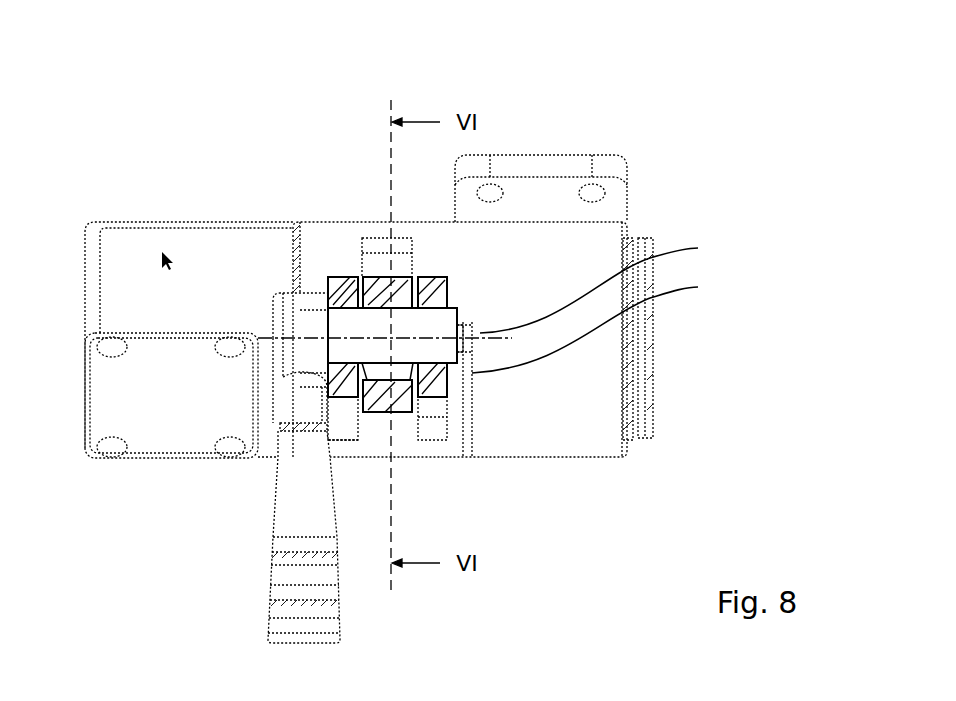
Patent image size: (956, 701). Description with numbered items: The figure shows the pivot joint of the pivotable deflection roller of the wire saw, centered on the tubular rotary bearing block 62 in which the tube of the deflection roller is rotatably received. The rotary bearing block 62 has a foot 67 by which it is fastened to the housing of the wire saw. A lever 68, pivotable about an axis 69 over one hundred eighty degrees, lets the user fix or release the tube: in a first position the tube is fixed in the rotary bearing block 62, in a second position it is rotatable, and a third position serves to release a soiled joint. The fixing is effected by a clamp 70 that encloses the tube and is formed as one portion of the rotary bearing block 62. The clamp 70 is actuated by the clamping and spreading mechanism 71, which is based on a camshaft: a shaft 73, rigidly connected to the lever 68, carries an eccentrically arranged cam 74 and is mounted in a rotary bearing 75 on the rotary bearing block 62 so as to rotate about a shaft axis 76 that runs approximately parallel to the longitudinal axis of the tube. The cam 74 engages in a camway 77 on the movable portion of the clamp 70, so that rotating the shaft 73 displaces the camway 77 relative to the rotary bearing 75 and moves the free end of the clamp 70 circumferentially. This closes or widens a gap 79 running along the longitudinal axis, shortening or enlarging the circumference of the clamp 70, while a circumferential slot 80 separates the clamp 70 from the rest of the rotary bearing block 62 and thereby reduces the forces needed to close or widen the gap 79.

The rotary bearing block 62 is at (567, 433).
The foot 67 is at (563, 170).
The lever 68 is at (297, 502).
The axis 69 is at (243, 333).
The clamp 70 is at (410, 445).
The clamping and spreading mechanism 71 is at (392, 63).
The shaft 73 is at (357, 333).
The cam 74 is at (385, 365).
The rotary bearing 75 is at (428, 290).
The shaft axis 76 is at (300, 337).
The camway 77 is at (393, 290).
The gap 79 is at (605, 284).
The slot 80 is at (601, 324).